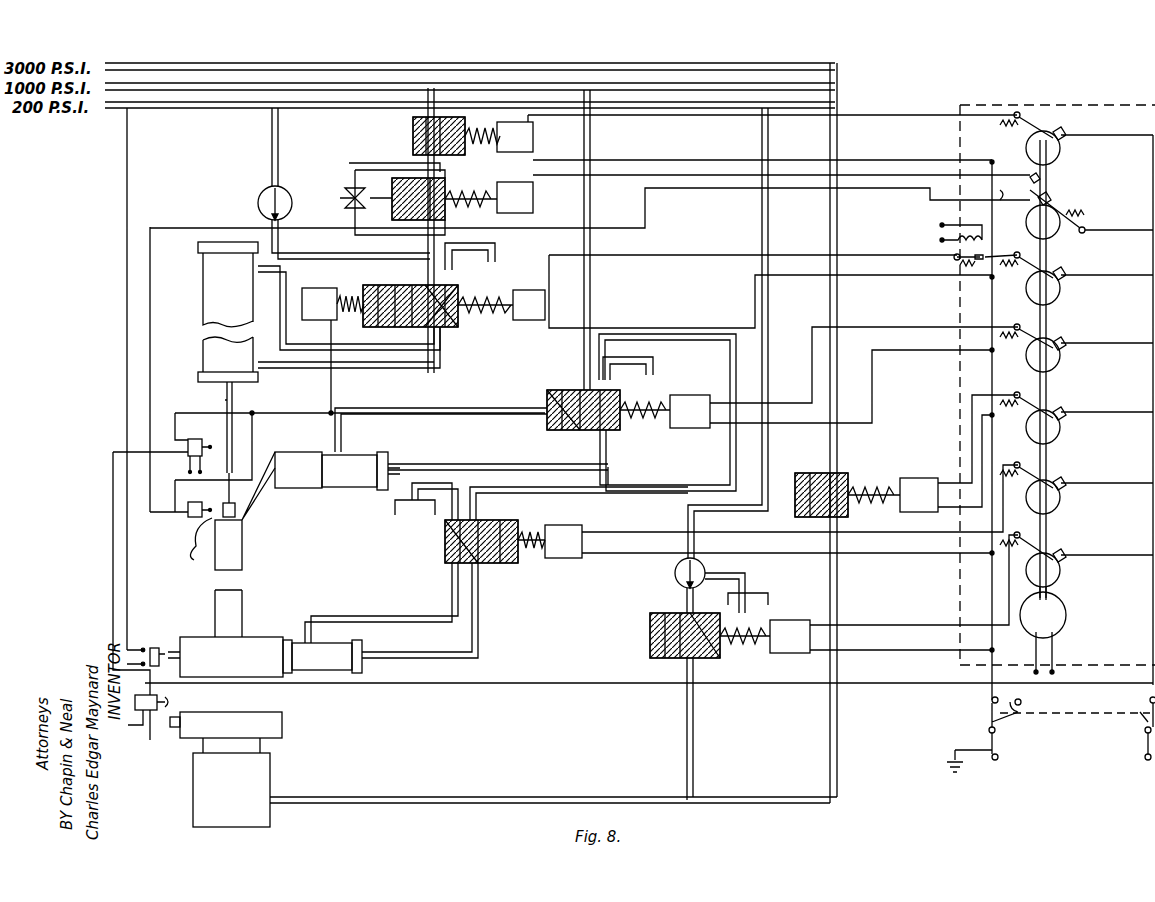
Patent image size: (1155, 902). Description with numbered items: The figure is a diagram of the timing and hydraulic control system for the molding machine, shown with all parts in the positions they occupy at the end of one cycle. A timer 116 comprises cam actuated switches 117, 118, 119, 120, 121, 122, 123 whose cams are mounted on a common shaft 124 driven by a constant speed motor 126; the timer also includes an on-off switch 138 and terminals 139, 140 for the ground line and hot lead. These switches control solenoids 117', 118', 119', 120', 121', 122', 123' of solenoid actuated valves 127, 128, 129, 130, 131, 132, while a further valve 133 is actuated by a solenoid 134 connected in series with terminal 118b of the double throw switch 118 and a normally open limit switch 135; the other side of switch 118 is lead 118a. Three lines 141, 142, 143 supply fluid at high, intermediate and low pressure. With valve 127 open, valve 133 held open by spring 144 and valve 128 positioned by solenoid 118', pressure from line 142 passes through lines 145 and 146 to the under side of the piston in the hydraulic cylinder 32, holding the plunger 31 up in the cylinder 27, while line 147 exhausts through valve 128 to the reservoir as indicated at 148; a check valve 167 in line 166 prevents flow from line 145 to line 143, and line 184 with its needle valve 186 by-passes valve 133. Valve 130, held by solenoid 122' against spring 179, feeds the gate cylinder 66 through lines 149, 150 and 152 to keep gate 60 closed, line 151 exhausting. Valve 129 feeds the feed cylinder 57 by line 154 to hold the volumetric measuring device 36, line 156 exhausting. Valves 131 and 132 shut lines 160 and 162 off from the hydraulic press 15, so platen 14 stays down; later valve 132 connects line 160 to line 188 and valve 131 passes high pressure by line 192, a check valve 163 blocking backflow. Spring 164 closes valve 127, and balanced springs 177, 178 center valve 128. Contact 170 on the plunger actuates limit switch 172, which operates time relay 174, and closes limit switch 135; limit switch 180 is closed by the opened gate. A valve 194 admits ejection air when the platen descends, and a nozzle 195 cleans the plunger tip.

The platen 14 is at (226, 732).
The hydraulic press 15 is at (231, 790).
The cylinder 27 is at (228, 555).
The plunger 31 is at (238, 420).
The hydraulic cylinder 32 is at (228, 312).
The volumetric measuring device 36 is at (282, 486).
The feed cylinder 57 is at (345, 492).
The gate 60 is at (230, 657).
The gate cylinder 66 is at (327, 656).
The timer 116 is at (1154, 382).
The timer switch 117 is at (1076, 138).
The double throw switch 118 is at (1089, 214).
The lead 118a is at (977, 189).
The terminal 118b is at (1040, 175).
The timer switch 119 is at (1076, 278).
The cam actuated switch 120 is at (1076, 348).
The timer switch 121 is at (1076, 418).
The timer switch 122 is at (1076, 488).
The timer switch 123 is at (1076, 559).
The common shaft 124 is at (1050, 592).
The constant speed motor 126 is at (1068, 625).
The solenoid actuated valve 127 is at (412, 141).
The solenoid actuated valve 128 is at (420, 280).
The solenoid actuated valve 129 is at (580, 385).
The solenoid actuated valve 130 is at (488, 515).
The solenoid actuated valve 131 is at (826, 468).
The solenoid actuated valve 132 is at (665, 660).
The valve 133 is at (418, 199).
The solenoid 134 is at (515, 197).
The limit switch 135 is at (204, 490).
The on-off switch 138 is at (1020, 720).
The terminal 139 is at (1000, 756).
The terminal 140 is at (1140, 760).
The high pressure line 141 is at (850, 66).
The intermediate pressure line 142 is at (848, 87).
The low pressure line 143 is at (846, 108).
The spring 144 is at (465, 205).
The line 145 is at (438, 98).
The line 146 is at (395, 378).
The line 147 is at (404, 348).
The exhaust to reservoir 148 is at (510, 268).
The line 149 is at (594, 210).
The line 150 is at (690, 462).
The line 151 is at (470, 606).
The line 152 is at (422, 578).
The line 154 is at (492, 422).
The line 156 is at (532, 470).
The line 160 is at (772, 140).
The line 162 is at (843, 140).
The check valve 163 is at (674, 574).
The spring 164 is at (478, 140).
The line 166 is at (270, 156).
The check valve 167 is at (256, 205).
The contact 170 is at (221, 400).
The limit switch 172 is at (216, 430).
The time relay 174 is at (929, 242).
The spring 177 is at (355, 300).
The spring 178 is at (468, 310).
The spring 179 is at (530, 548).
The limit switch 180 is at (185, 627).
The by-pass line 184 is at (352, 168).
The adjustable needle valve 186 is at (340, 200).
The line 188 is at (695, 748).
The line 192 is at (745, 800).
The valve 194 is at (150, 740).
The nozzle 195 is at (180, 543).
The solenoid 117' is at (516, 137).
The solenoid 118' is at (320, 350).
The solenoid 119' is at (531, 305).
The solenoid 120' is at (671, 397).
The solenoid 121' is at (896, 474).
The solenoid 122' is at (572, 529).
The solenoid 123' is at (771, 619).